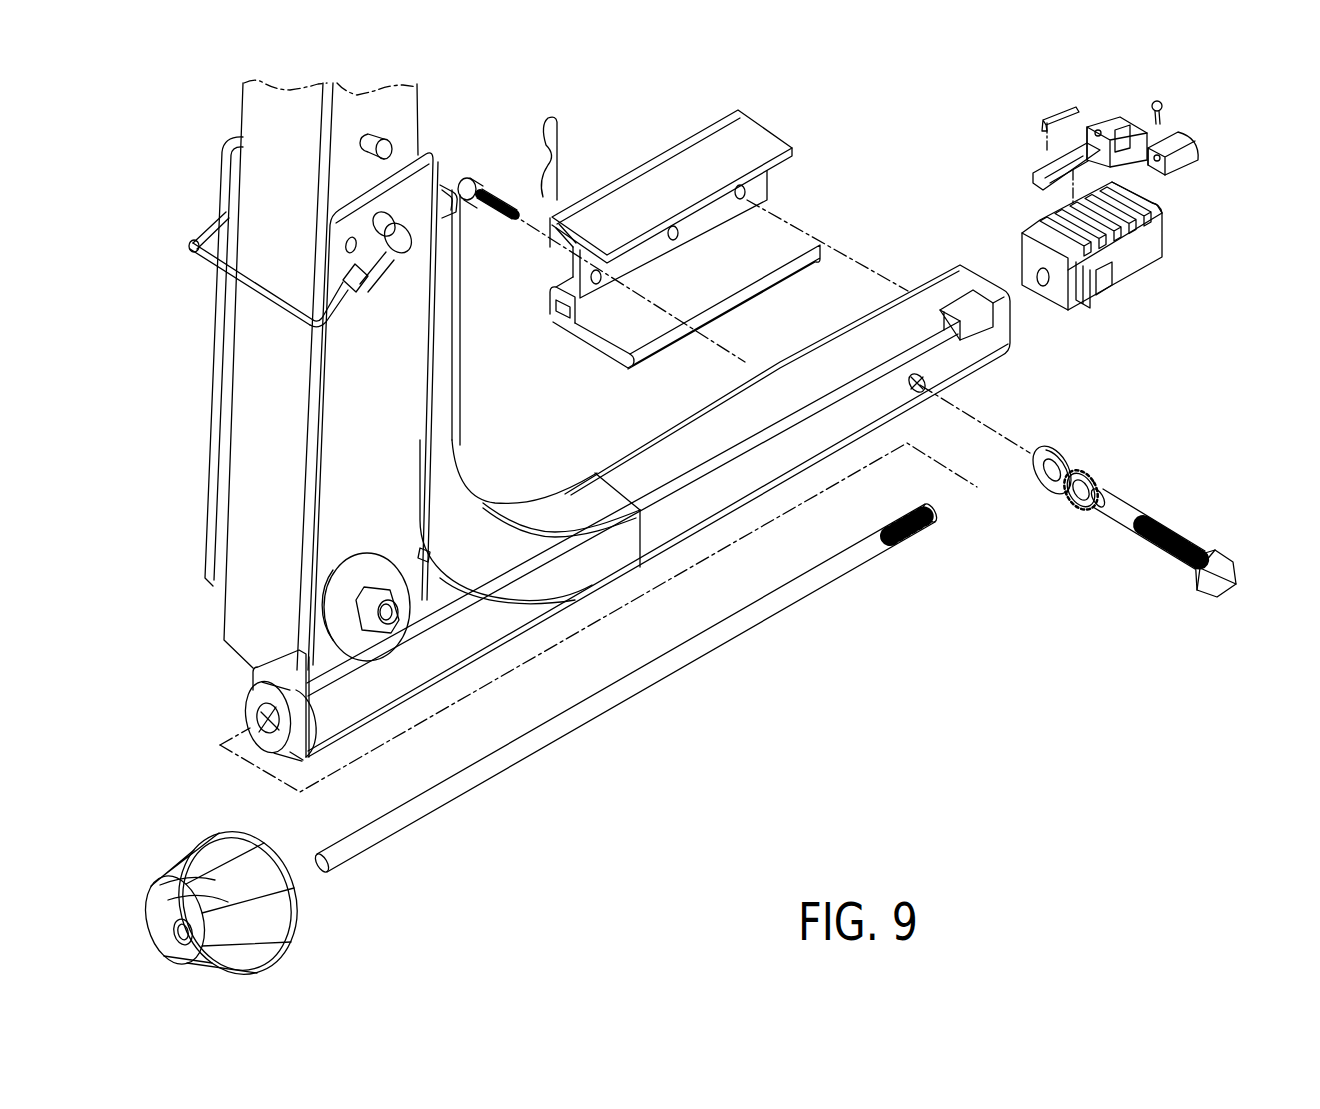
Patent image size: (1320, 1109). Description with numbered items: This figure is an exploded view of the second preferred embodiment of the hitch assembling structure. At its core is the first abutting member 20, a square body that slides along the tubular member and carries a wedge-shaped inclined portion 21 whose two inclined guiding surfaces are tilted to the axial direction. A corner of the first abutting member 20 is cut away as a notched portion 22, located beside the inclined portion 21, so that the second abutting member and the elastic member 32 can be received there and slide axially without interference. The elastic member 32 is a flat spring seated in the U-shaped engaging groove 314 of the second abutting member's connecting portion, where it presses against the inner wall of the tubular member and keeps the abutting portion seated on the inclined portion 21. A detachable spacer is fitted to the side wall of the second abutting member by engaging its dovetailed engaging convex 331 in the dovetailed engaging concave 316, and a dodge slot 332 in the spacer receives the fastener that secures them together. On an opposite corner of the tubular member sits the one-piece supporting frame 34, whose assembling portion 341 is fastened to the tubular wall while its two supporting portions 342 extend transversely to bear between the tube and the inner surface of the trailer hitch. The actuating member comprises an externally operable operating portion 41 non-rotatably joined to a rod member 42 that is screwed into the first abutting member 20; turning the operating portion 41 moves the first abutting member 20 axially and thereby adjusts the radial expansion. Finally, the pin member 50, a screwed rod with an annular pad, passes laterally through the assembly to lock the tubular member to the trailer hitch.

The first abutting member 20 is at (1130, 296).
The inclined portion 21 is at (1143, 250).
The notched portion 22 is at (1092, 257).
The elastic member 32 is at (1043, 117).
The engaging groove 314 is at (1033, 163).
The engaging concave 316 is at (1113, 128).
The engaging convex 331 is at (1180, 167).
The dodge slot 332 is at (1167, 143).
The supporting frame 34 is at (742, 218).
The assembling portion 341 is at (710, 220).
The supporting portions 342 is at (668, 180).
The operating portion 41 is at (198, 867).
The rod member 42 is at (557, 727).
The pin member 50 is at (1180, 537).